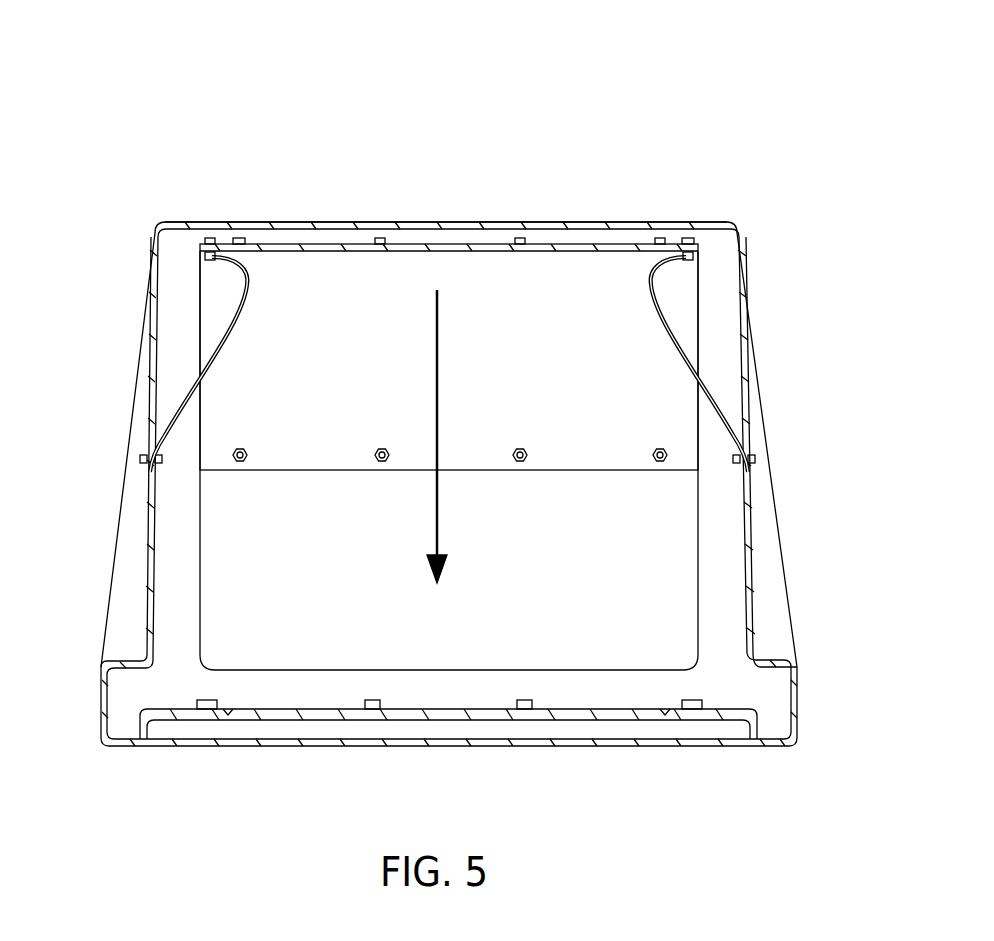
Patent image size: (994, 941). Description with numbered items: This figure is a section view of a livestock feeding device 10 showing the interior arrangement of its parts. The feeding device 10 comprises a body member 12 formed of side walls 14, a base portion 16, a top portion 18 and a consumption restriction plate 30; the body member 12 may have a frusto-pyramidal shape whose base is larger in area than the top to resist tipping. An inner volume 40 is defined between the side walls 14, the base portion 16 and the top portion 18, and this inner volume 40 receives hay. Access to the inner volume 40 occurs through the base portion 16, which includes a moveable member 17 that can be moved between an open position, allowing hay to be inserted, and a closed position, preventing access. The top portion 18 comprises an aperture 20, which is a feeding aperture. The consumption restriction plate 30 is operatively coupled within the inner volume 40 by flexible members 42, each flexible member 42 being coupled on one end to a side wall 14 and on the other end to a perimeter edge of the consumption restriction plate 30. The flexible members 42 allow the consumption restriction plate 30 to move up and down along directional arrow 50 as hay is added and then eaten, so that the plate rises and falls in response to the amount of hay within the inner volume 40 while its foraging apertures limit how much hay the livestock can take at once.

The livestock feeding device 10 is at (676, 74).
The body member 12 is at (773, 613).
The side walls 14 is at (147, 568).
The base portion 16 is at (775, 720).
The moveable member 17 is at (457, 721).
The top portion 18 is at (202, 223).
The aperture 20 is at (555, 220).
The consumption restriction plate 30 is at (305, 247).
The inner volume 40 is at (336, 586).
The flexible members 42 is at (377, 360).
The directional arrow 50 is at (438, 427).